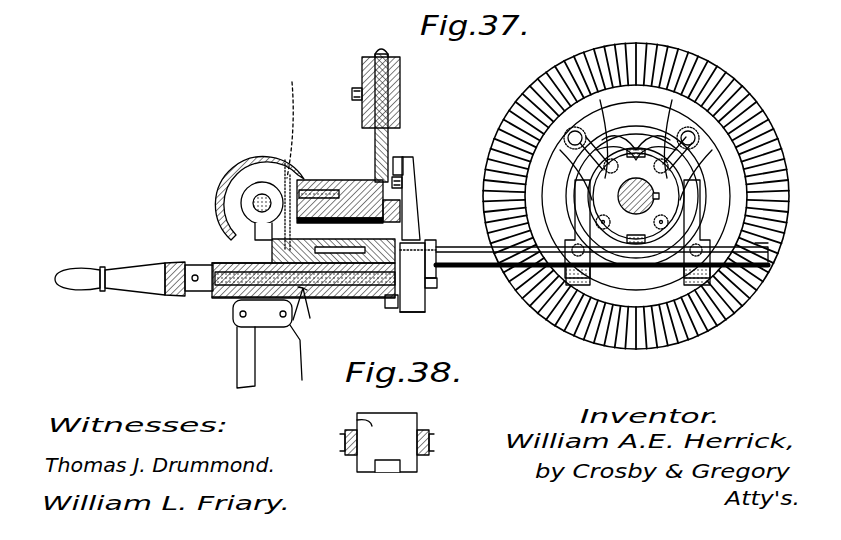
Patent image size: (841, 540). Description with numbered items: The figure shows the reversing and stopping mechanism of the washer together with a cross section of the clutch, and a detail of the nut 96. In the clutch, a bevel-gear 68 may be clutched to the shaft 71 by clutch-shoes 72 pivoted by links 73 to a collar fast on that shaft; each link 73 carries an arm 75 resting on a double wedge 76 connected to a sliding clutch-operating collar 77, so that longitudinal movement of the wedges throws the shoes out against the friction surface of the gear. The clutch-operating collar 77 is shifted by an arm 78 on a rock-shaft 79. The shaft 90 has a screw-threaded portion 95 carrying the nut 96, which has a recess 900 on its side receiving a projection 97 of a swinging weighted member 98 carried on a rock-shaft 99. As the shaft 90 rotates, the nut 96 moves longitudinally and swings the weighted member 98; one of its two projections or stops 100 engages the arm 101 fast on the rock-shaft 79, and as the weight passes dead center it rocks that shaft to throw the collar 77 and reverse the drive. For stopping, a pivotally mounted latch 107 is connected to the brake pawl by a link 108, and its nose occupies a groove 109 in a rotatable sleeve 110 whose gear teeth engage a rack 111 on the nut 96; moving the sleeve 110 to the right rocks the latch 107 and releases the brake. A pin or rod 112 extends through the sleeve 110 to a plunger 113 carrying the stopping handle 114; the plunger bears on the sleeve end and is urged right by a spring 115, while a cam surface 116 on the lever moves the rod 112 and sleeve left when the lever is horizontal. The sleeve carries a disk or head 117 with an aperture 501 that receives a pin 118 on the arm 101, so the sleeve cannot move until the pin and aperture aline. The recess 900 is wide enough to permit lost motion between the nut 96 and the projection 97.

In FIG. 37, the bevel-gear 68 is at (656, 72).
In FIG. 37, the shaft 71 is at (690, 95).
In FIG. 37, the clutch-shoes 72 is at (524, 122).
In FIG. 37, the links 73 is at (578, 128).
In FIG. 37, the arm 75 is at (638, 140).
In FIG. 37, the double wedge 76 is at (590, 200).
In FIG. 37, the clutch-operating collar 77 is at (598, 180).
In FIG. 37, the arm 78 is at (706, 182).
In FIG. 37, the rock-shaft 79 is at (497, 268).
In FIG. 37, the shaft 90 is at (222, 168).
In FIG. 38, the screw-threaded portion 95 is at (432, 436).
In FIG. 37, the nut 96 is at (266, 196).
In FIG. 38, the nut 96 is at (357, 418).
In FIG. 37, the projection 97 is at (280, 172).
In FIG. 37, the swinging weighted member 98 is at (335, 180).
In FIG. 37, the rock-shaft 99 is at (355, 186).
In FIG. 37, the projections or stops 100 is at (415, 158).
In FIG. 37, the arm 101 is at (420, 95).
In FIG. 37, the latch 107 is at (258, 375).
In FIG. 37, the link 108 is at (235, 355).
In FIG. 37, the groove 109 is at (315, 298).
In FIG. 37, the rotatable sleeve 110 is at (340, 298).
In FIG. 37, the rack 111 is at (238, 198).
In FIG. 37, the pin or rod 112 is at (302, 342).
In FIG. 37, the plunger 113 is at (222, 233).
In FIG. 37, the stopping handle 114 is at (146, 287).
In FIG. 37, the spring 115 is at (215, 300).
In FIG. 37, the cam surface 116 is at (190, 266).
In FIG. 37, the disk or head 117 is at (425, 300).
In FIG. 37, the pin 118 is at (416, 310).
In FIG. 37, the aperture 501 is at (391, 310).
In FIG. 37, the recess 900 is at (299, 120).
In FIG. 38, the recess 900 is at (393, 470).